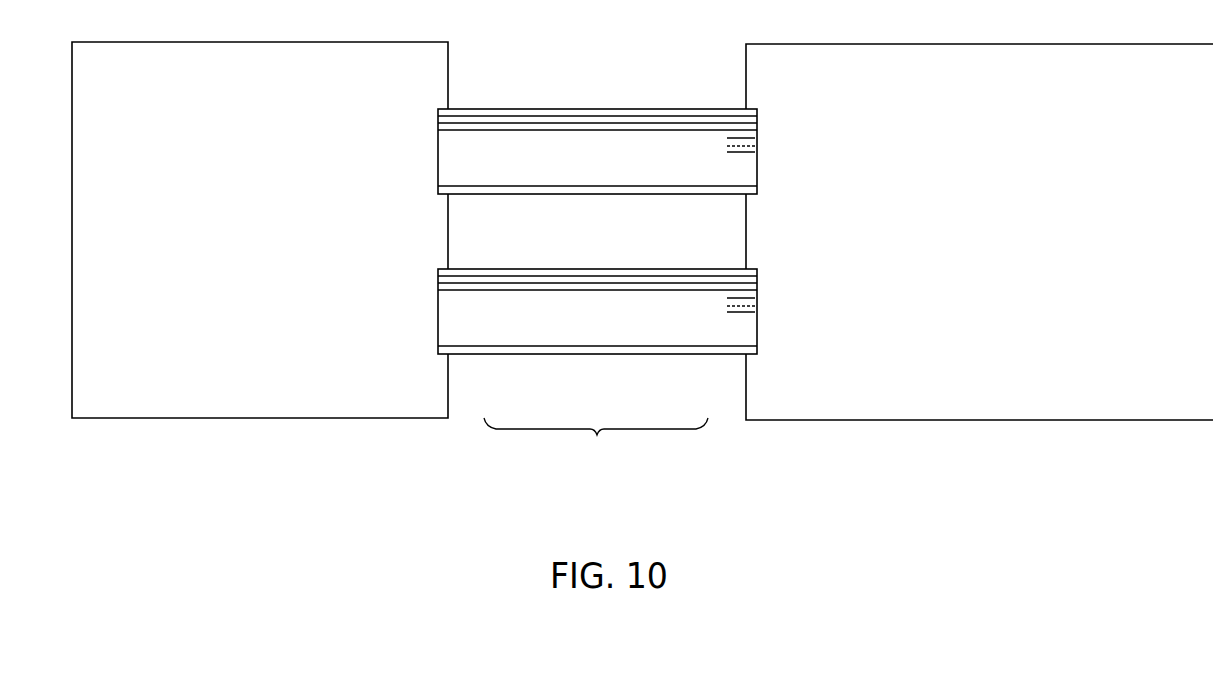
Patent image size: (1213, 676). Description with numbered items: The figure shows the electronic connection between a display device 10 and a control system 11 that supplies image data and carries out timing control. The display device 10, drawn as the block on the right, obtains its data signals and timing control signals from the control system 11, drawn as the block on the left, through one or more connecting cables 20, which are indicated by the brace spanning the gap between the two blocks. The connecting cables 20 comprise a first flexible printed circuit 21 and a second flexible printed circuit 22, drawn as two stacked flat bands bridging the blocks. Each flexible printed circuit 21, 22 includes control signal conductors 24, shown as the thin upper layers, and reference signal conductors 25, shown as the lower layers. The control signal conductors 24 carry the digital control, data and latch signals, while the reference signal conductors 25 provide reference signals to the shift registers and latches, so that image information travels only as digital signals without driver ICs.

The display device 10 is at (1127, 44).
The control system 11 is at (372, 42).
The connecting cables 20 is at (596, 446).
The flexible printed circuit 21 is at (440, 163).
The flexible printed circuit 22 is at (437, 320).
The control signal conductors 24 is at (608, 116).
The reference signal conductors 25 is at (568, 186).